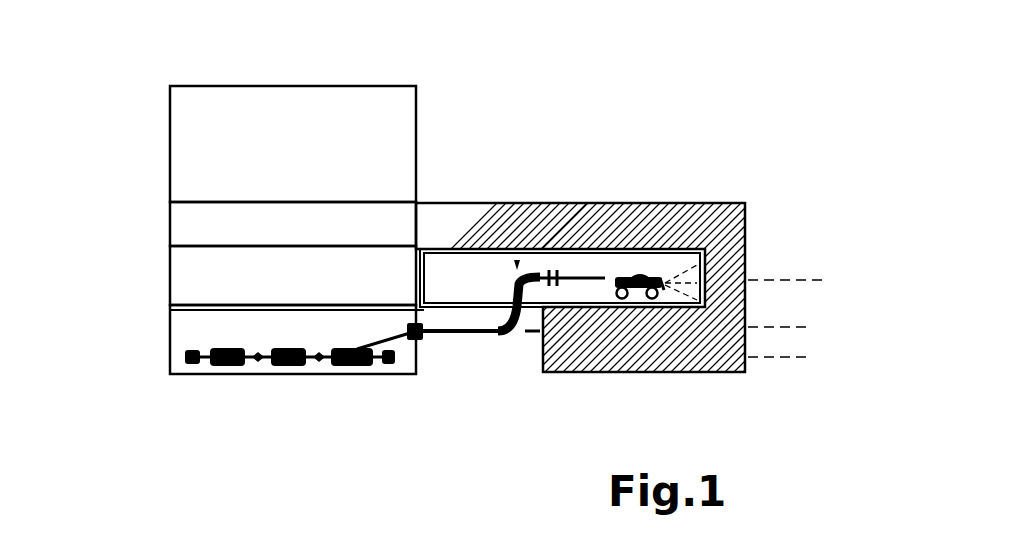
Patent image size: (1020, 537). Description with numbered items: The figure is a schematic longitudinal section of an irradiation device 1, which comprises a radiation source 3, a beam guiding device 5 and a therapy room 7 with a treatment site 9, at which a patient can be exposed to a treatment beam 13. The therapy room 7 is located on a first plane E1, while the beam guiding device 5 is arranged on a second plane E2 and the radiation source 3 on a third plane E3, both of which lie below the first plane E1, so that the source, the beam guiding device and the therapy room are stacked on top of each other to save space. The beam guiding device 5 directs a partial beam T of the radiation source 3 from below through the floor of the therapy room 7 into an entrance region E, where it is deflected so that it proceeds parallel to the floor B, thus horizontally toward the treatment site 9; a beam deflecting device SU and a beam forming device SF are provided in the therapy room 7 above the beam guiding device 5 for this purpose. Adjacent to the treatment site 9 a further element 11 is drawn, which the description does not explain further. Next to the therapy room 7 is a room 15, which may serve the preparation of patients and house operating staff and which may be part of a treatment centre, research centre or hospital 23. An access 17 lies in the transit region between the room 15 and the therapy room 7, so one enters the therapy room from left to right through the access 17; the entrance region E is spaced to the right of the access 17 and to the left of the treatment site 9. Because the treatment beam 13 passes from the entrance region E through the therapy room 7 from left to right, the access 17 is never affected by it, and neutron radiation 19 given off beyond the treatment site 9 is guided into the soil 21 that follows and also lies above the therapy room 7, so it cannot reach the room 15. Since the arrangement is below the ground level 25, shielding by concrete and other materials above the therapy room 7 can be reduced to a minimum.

The irradiation device 1 is at (145, 347).
The radiation source 3 is at (305, 378).
The beam guiding device 5 is at (519, 341).
The therapy room 7 is at (505, 253).
The treatment site 9 is at (643, 265).
The coupling of carriage 11 is at (660, 276).
The treatment beam 13 is at (607, 278).
The room 15 is at (185, 272).
The access 17 is at (416, 275).
The neutron radiation 19 is at (722, 240).
The soil 21 is at (722, 262).
The hospital 23 is at (158, 150).
The ground level 25 is at (633, 203).
The entrance region E is at (517, 262).
The floor B is at (483, 312).
The partial beam T is at (461, 338).
The beam deflecting device SU is at (523, 302).
The beam forming device SF is at (557, 283).
The first plane E1 is at (801, 279).
The second plane E2 is at (794, 326).
The third plane E3 is at (794, 356).